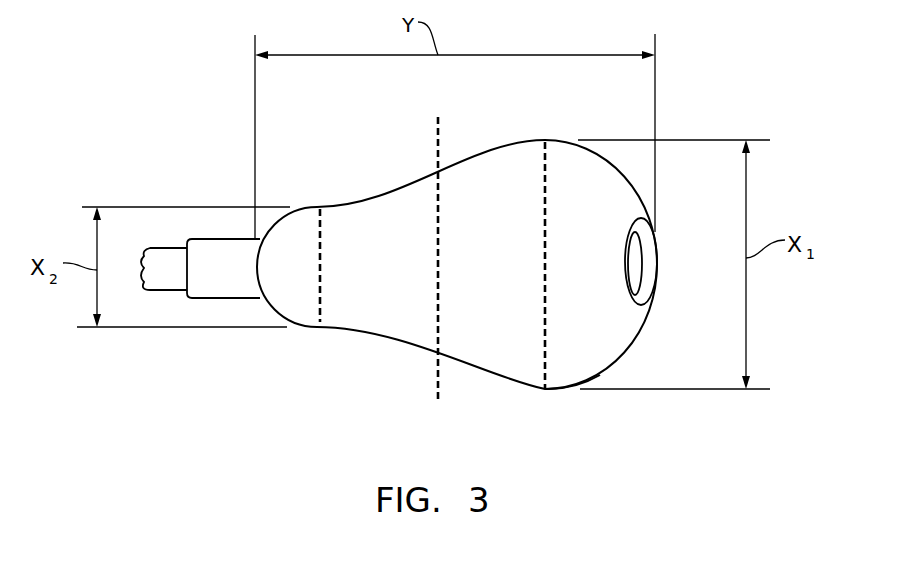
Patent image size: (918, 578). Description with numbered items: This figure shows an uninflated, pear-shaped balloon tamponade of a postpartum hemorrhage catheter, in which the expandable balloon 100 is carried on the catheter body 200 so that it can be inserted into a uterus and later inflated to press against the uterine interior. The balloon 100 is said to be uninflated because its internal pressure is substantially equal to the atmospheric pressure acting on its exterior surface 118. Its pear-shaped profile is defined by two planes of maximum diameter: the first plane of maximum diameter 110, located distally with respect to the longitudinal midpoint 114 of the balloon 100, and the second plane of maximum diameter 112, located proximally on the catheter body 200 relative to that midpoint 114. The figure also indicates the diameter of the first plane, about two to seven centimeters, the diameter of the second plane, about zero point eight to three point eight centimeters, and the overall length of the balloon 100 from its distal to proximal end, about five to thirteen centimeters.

The expandable balloon 100 is at (381, 182).
The first plane of maximum diameter 110 is at (545, 355).
The second plane of maximum diameter 112 is at (322, 312).
The longitudinal midpoint 114 is at (441, 273).
The exterior surface 118 is at (569, 396).
The catheter body 200 is at (167, 262).